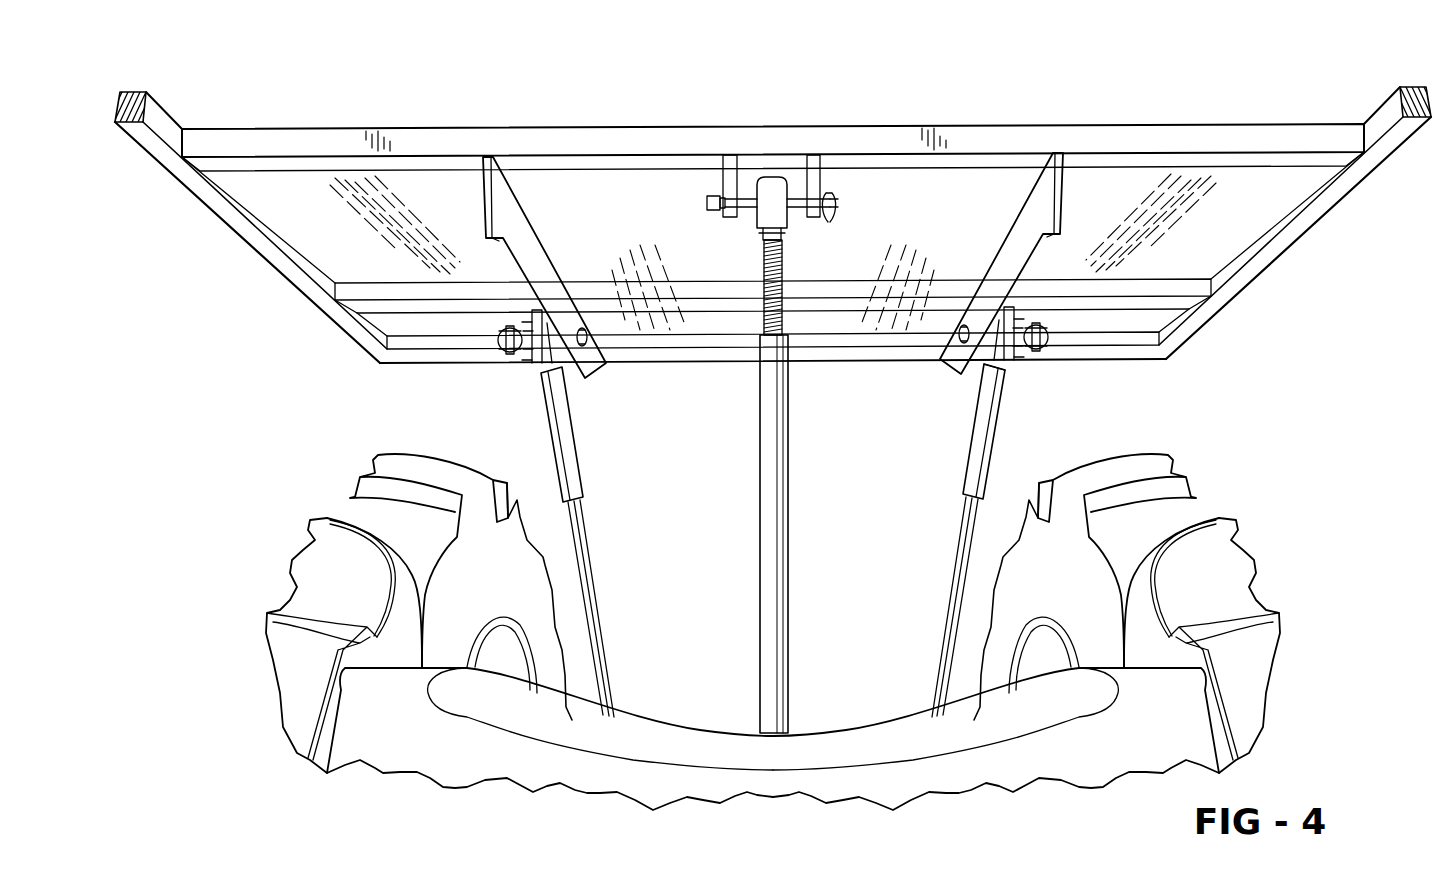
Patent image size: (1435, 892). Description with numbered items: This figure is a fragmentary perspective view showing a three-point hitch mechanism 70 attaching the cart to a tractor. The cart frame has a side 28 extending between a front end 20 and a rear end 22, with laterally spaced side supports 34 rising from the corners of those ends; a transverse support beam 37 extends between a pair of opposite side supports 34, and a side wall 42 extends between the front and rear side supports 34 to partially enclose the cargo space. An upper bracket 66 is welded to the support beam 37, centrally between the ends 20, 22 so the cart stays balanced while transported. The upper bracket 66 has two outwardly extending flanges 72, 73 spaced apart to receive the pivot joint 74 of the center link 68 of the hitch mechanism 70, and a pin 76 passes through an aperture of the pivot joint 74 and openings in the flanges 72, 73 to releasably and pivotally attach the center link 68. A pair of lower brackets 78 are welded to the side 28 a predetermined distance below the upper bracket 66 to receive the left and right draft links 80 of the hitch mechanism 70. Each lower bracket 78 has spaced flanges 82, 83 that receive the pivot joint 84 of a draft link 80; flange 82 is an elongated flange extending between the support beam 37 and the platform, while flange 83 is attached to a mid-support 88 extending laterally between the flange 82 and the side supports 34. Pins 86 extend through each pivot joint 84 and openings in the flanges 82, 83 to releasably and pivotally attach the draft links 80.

The front end 20 is at (1414, 130).
The rear end 22 is at (142, 135).
The right side 28 is at (1275, 245).
The side supports 34 is at (130, 90).
The transverse support beam 37 is at (556, 130).
The side wall 42 is at (818, 302).
The upper bracket 66 is at (852, 185).
The center link 68 is at (789, 572).
The three-point hitch mechanism 70 is at (1022, 448).
The flange 72 is at (730, 155).
The flange 73 is at (813, 155).
The pivot joint 74 is at (768, 210).
The pin 76 is at (700, 205).
The lower brackets 78 is at (478, 411).
The draft links 80 is at (582, 481).
The flange 82 is at (544, 238).
The flange 83 is at (536, 370).
The pivot joint 84 is at (516, 328).
The pins 86 is at (588, 337).
The mid-supports 88 is at (375, 296).